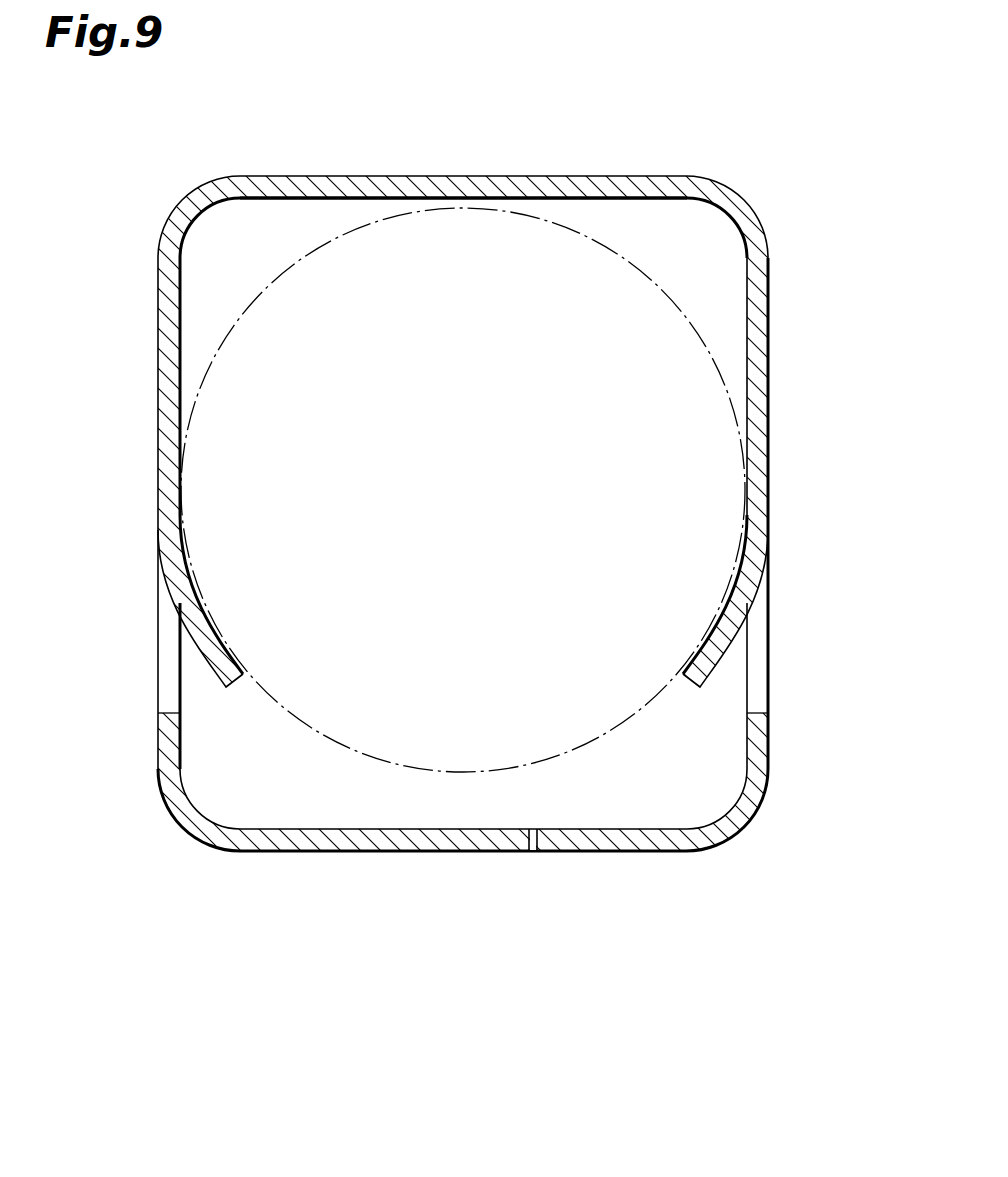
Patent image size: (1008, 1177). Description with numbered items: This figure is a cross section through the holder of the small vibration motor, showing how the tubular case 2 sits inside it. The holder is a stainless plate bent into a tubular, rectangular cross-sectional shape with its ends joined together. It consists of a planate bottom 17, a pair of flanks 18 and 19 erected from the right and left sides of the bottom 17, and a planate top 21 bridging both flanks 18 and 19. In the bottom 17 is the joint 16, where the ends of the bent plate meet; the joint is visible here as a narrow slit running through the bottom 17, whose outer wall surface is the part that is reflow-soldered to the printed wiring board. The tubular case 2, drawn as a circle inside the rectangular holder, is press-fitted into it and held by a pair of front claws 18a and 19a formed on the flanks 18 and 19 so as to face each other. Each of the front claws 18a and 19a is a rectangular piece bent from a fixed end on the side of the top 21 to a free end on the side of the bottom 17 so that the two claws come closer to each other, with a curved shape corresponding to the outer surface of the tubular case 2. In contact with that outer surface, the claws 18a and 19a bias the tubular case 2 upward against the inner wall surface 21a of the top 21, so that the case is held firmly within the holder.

The tubular case 2 is at (632, 262).
The joint 16 is at (533, 857).
The bottom 17 is at (341, 857).
The flank 18 is at (158, 378).
The front claw 18a is at (193, 627).
The flank 19 is at (768, 377).
The front claw 19a is at (727, 630).
The top 21 is at (458, 177).
The inner wall surface 21a is at (264, 204).